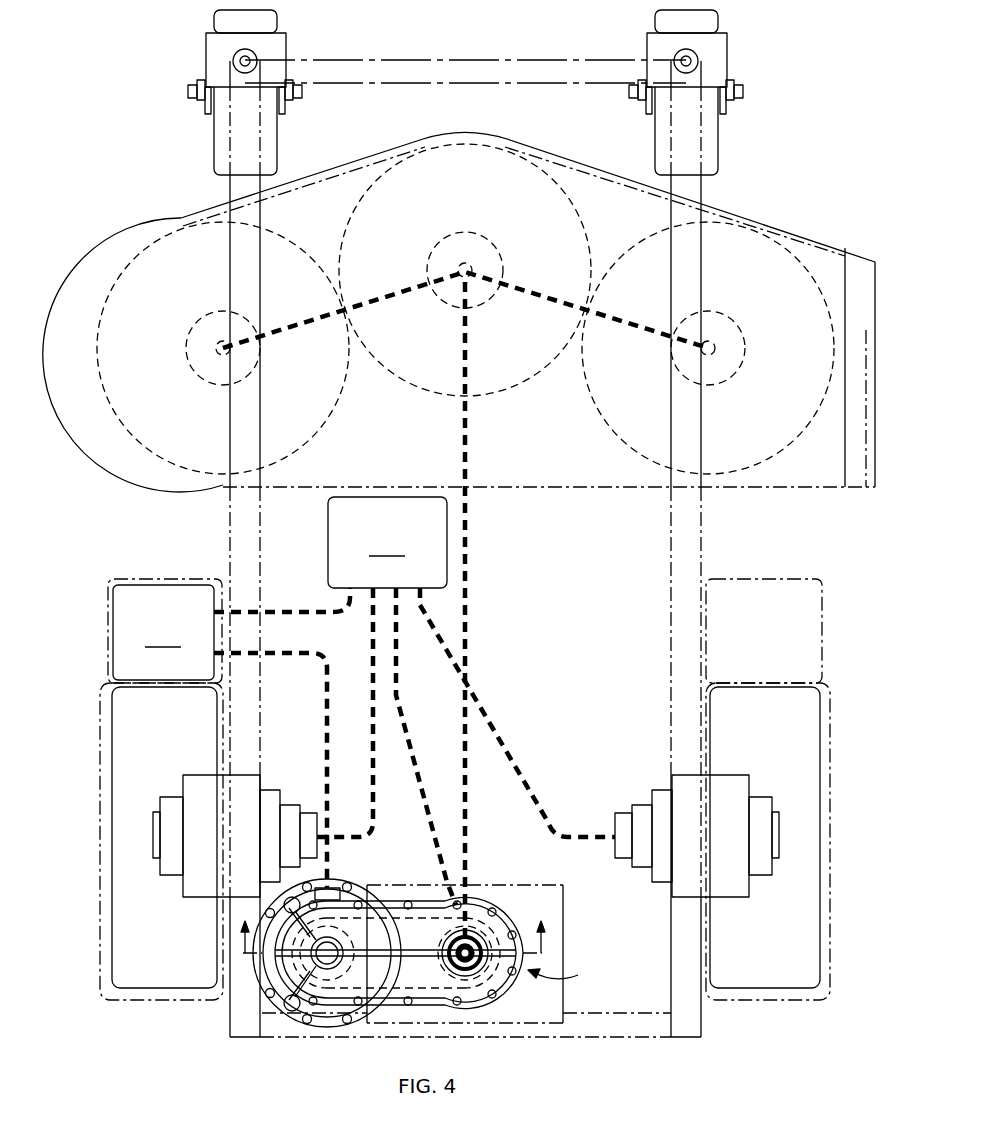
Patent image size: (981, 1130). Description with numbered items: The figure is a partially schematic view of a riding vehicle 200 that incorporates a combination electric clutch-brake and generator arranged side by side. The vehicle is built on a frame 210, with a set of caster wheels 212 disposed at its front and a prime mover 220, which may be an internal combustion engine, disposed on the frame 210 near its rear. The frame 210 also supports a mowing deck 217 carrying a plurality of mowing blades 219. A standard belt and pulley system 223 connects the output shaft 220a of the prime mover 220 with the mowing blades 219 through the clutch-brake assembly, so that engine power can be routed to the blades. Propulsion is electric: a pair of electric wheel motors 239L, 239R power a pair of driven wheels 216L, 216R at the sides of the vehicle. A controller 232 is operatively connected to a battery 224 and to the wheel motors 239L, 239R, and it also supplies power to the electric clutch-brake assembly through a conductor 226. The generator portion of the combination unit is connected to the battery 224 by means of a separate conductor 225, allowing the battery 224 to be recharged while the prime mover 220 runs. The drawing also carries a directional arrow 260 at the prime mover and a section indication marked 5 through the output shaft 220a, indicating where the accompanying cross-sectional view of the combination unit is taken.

The riding vehicle 200 is at (126, 64).
The frame 210 is at (372, 62).
The caster wheels 212 is at (278, 22).
The mowing deck 217 is at (358, 162).
The mowing blades 219 is at (178, 232).
The belt and pulley system 223 is at (470, 608).
The battery 224 is at (163, 632).
The conductor 225 is at (282, 656).
The conductor 226 is at (422, 778).
The controller 232 is at (414, 667).
The electric wheel motor 239L is at (187, 885).
The electric wheel motor 239R is at (746, 885).
The driven wheel 216L is at (103, 970).
The driven wheel 216R is at (830, 970).
The prime mover 220 is at (565, 950).
The output shaft 220a is at (446, 963).
The rotation direction arrow 260 is at (574, 973).
The section line 5- 5 is at (392, 927).